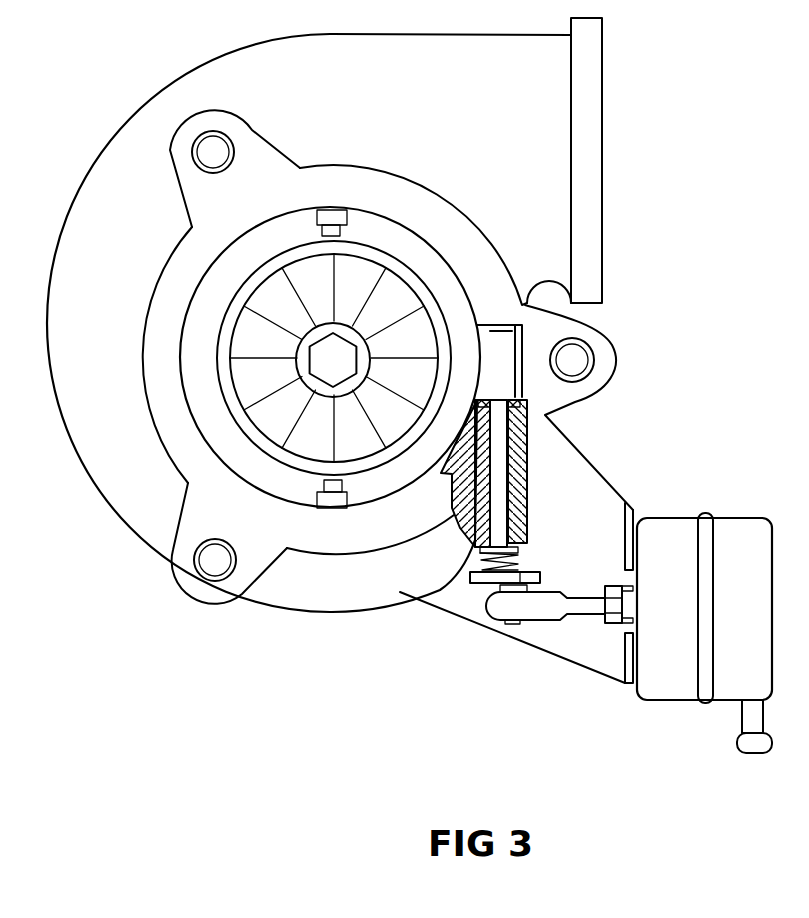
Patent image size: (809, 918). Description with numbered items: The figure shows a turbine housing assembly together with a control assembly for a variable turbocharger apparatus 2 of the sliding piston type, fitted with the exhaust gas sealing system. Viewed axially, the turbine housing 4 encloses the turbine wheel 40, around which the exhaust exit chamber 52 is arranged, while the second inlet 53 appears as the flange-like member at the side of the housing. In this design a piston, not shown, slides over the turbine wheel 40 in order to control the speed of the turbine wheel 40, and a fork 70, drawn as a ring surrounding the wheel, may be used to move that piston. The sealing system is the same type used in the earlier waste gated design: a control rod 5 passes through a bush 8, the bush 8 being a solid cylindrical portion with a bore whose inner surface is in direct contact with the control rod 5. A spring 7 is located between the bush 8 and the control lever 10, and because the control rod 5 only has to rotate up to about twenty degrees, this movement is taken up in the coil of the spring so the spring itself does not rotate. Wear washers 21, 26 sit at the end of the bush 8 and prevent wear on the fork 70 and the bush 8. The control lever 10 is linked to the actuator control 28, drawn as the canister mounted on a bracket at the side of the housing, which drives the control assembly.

The variable turbocharger apparatus 2 is at (660, 160).
The turbine housing 4 is at (532, 97).
The second inlet 53 is at (605, 233).
The exhaust exit chamber 52 is at (193, 362).
The fork 70 is at (408, 242).
The turbine wheel 40 is at (310, 430).
The wear washer 26 is at (522, 400).
The wear washer 21 is at (512, 407).
The bush 8 is at (512, 452).
The control rod 5 is at (497, 483).
The spring 7 is at (510, 553).
The control lever 10 is at (530, 577).
The actuator control 28 is at (680, 673).